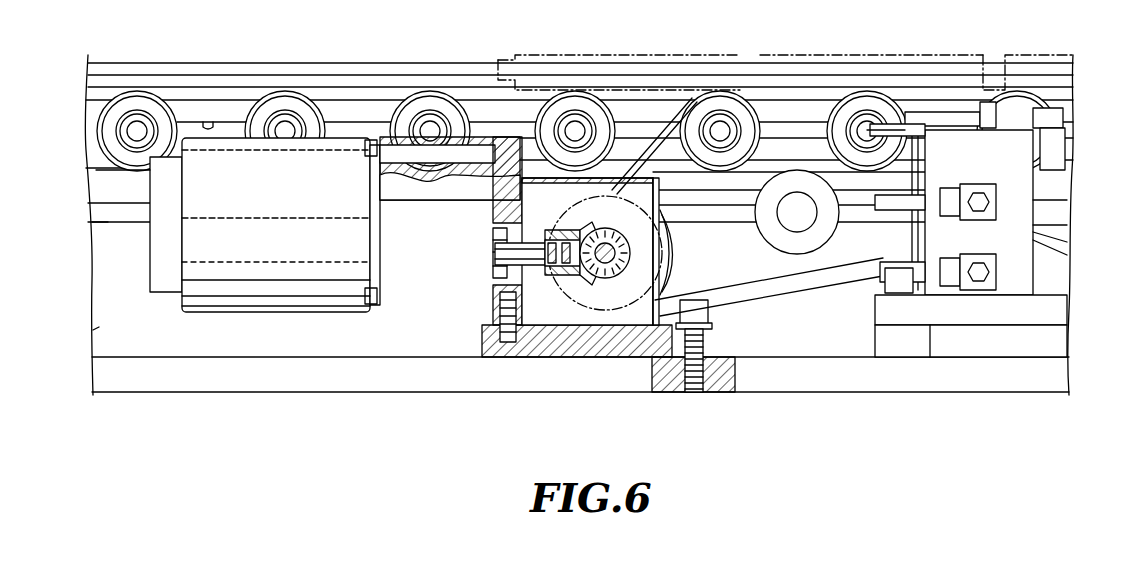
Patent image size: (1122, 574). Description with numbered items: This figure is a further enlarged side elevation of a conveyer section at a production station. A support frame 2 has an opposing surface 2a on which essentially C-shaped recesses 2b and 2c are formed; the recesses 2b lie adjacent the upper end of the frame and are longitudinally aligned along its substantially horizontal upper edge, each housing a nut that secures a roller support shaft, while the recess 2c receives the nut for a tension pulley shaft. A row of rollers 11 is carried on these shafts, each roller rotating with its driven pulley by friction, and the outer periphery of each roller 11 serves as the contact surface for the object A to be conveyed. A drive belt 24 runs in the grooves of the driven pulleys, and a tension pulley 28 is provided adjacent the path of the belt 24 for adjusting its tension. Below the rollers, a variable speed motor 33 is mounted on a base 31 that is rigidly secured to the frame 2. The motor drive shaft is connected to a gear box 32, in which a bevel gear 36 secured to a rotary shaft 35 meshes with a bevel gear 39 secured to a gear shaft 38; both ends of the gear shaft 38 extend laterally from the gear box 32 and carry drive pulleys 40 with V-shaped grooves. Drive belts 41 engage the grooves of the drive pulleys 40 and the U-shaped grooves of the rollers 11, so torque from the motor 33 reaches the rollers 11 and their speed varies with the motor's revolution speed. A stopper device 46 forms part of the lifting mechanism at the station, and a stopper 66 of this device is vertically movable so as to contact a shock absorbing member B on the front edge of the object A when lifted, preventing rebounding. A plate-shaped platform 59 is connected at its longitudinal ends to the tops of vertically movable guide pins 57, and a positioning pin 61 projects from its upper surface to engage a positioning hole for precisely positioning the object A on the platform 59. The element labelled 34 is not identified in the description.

The support frame 2 is at (90, 284).
The opposing surface 2a is at (100, 331).
The recess 2b is at (211, 122).
The recess 2c is at (106, 222).
The roller 11 is at (140, 102).
The drive belt 24 is at (368, 100).
The tension pulley 28 is at (778, 236).
The base 31 is at (413, 392).
The gear box 32 is at (630, 250).
The variable speed motor 33 is at (299, 312).
The bolt 34 is at (712, 313).
The rotary shaft 35 is at (533, 258).
The bevel gear 36 is at (570, 268).
The gear shaft 38 is at (618, 251).
The bevel gear 39 is at (600, 280).
The drive pulley 40 is at (664, 262).
The drive belt 41 is at (800, 96).
The stopper device 46 is at (1040, 262).
The guide pin 57 is at (1033, 282).
The platform 59 is at (1066, 148).
The positioning pin 61 is at (1066, 115).
The stopper 66 is at (982, 110).
The object A is at (750, 55).
The shock absorbing member B is at (513, 55).